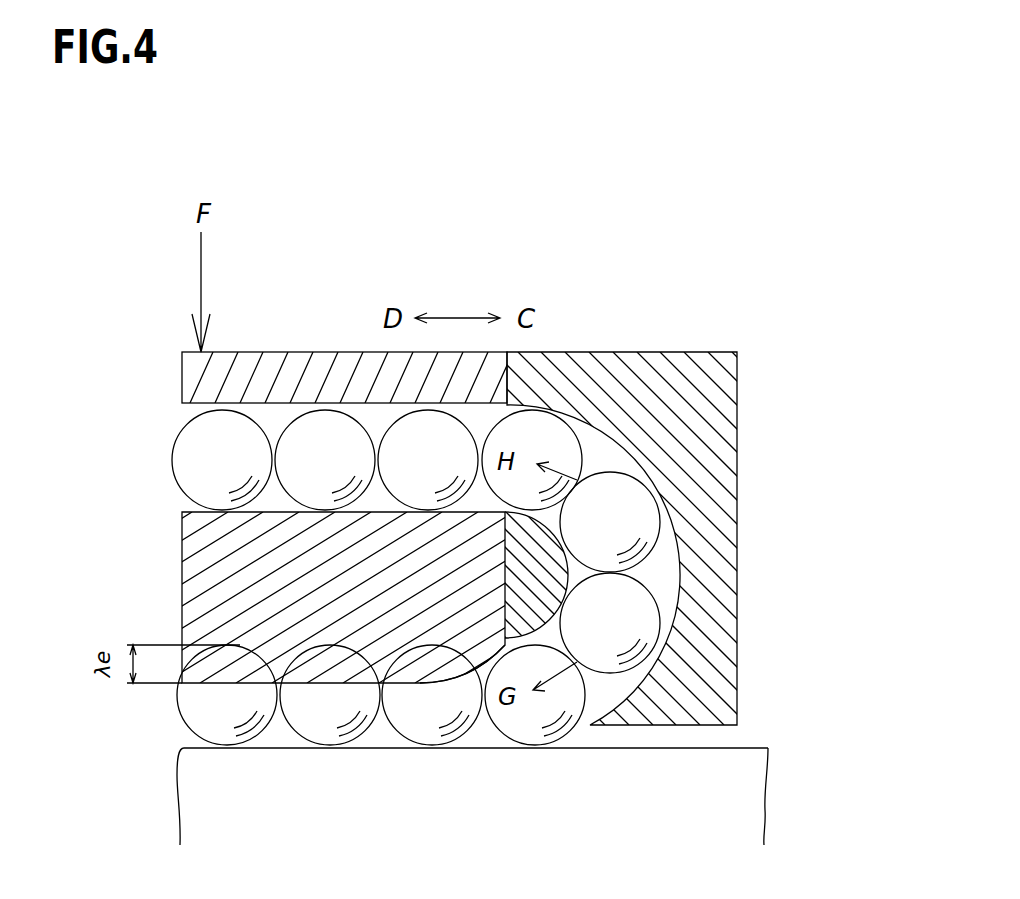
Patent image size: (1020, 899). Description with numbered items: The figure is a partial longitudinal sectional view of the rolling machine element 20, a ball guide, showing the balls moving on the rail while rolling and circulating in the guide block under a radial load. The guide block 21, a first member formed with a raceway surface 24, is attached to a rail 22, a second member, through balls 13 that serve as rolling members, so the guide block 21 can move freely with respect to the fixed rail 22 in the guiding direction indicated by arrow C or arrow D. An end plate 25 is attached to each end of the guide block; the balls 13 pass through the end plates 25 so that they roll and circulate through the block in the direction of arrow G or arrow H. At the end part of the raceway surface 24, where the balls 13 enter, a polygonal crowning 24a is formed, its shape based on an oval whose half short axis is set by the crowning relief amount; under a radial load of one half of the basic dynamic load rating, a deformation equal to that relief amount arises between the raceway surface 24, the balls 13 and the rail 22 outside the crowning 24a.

The rolling machine element 20 is at (362, 232).
The guide block 21 is at (300, 352).
The rail 22 is at (752, 747).
The end plate 25 is at (680, 352).
The balls 13 is at (172, 456).
The raceway surface 24 is at (223, 686).
The crowning 24a is at (458, 674).